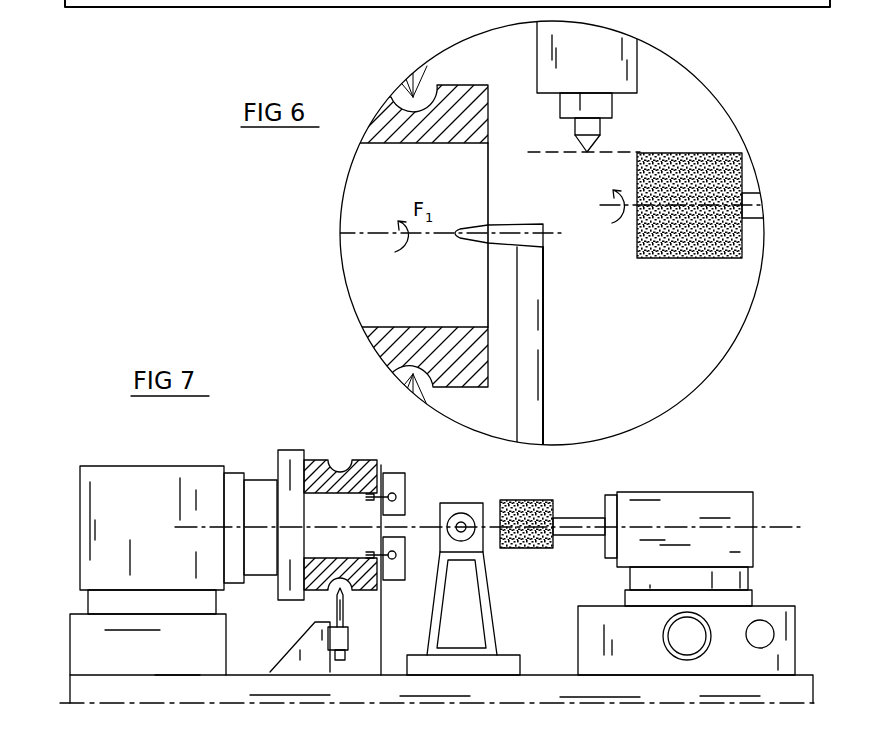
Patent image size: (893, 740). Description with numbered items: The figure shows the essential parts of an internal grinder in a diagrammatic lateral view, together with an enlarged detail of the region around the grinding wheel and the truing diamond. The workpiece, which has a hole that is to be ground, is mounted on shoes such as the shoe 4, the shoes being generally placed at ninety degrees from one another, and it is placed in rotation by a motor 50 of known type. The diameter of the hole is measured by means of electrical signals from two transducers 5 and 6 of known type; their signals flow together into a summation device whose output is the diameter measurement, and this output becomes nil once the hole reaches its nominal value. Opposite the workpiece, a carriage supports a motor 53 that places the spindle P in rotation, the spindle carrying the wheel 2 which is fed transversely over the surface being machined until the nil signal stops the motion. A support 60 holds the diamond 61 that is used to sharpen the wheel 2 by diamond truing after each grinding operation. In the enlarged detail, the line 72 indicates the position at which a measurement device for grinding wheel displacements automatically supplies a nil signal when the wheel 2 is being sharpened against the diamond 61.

In FIG. 6, the wheel 2 is at (690, 261).
In FIG. 7, the shoe 4 is at (345, 610).
In FIG. 6, the transducer 5 is at (412, 236).
In FIG. 7, the transducer 5 is at (394, 494).
In FIG. 7, the transducer 6 is at (393, 559).
In FIG. 7, the motor 50 is at (137, 488).
In FIG. 7, the motor 53 is at (668, 500).
In FIG. 7, the support 60 is at (475, 503).
In FIG. 6, the diamond 61 is at (587, 156).
In FIG. 6, the line 72 is at (635, 144).
In FIG. 7, the spindle P is at (579, 520).